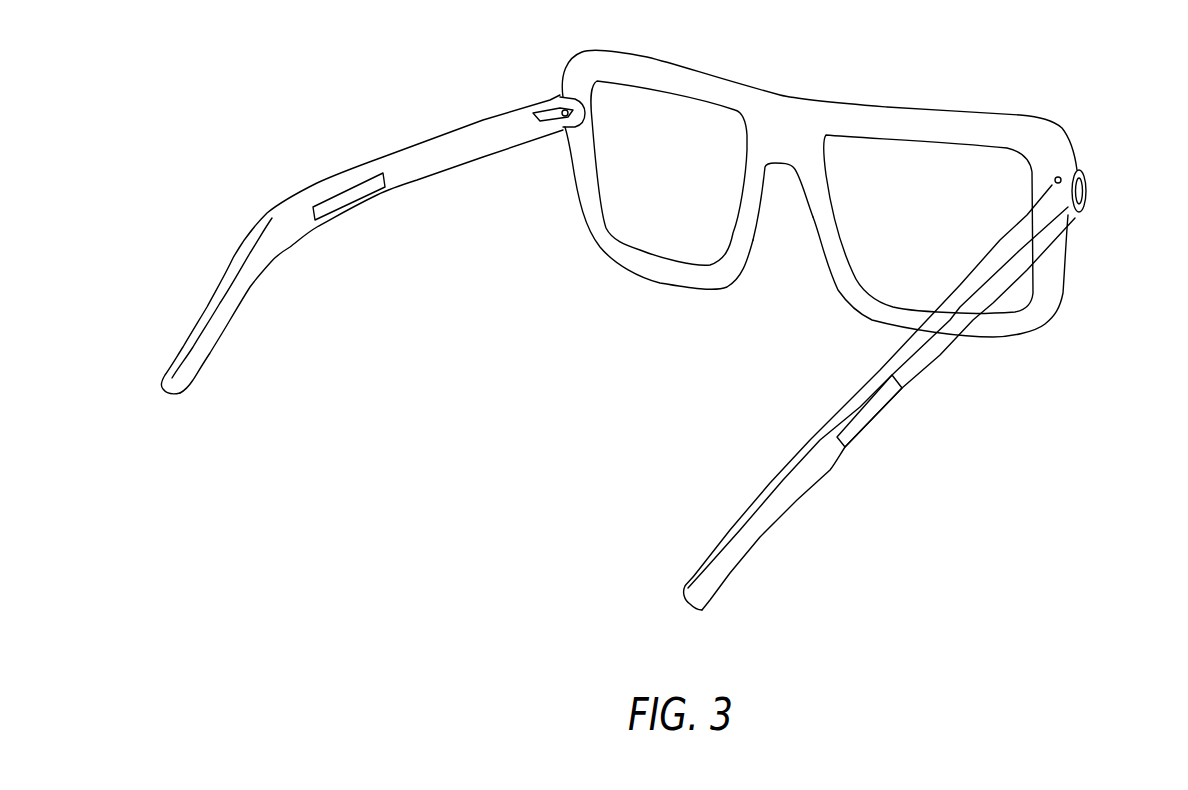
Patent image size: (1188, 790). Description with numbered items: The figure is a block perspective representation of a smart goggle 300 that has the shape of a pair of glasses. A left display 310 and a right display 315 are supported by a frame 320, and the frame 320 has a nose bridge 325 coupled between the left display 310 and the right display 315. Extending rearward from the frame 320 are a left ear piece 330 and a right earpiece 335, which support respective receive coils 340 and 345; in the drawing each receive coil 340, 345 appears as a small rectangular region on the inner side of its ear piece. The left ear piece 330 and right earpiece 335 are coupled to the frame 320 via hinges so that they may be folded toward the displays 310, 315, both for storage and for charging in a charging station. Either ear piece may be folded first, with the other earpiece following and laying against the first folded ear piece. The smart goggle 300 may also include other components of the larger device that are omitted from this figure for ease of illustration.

The smart goggle 300 is at (1090, 75).
The left display 310 is at (662, 108).
The right display 315 is at (962, 150).
The frame 320 is at (883, 103).
The nose bridge 325 is at (787, 170).
The left ear piece 330 is at (457, 170).
The right earpiece 335 is at (932, 348).
The receive coil 340 is at (342, 203).
The receive coil 345 is at (870, 408).